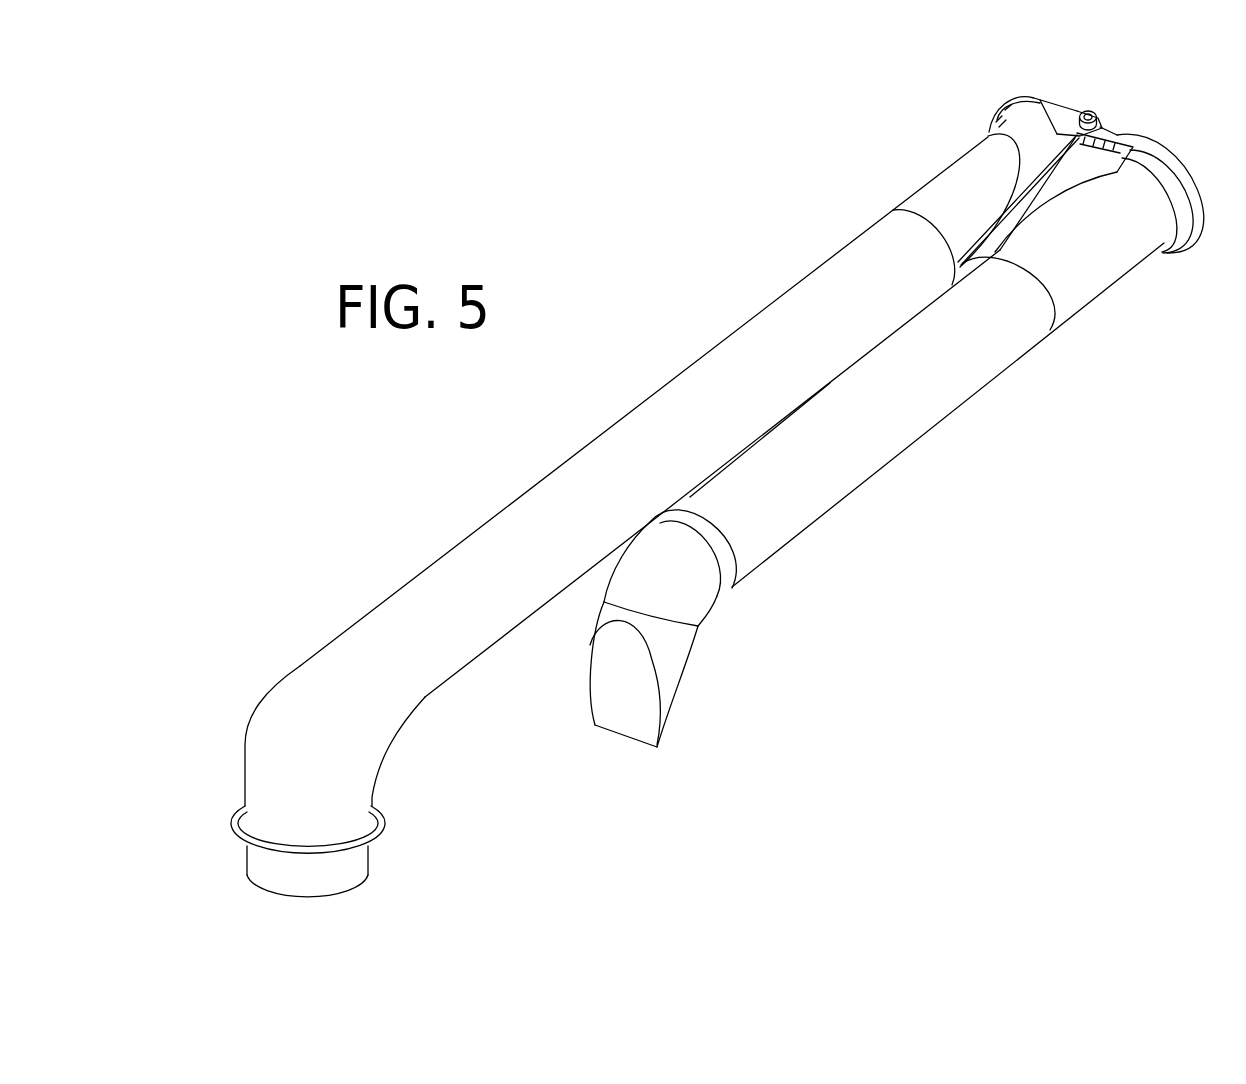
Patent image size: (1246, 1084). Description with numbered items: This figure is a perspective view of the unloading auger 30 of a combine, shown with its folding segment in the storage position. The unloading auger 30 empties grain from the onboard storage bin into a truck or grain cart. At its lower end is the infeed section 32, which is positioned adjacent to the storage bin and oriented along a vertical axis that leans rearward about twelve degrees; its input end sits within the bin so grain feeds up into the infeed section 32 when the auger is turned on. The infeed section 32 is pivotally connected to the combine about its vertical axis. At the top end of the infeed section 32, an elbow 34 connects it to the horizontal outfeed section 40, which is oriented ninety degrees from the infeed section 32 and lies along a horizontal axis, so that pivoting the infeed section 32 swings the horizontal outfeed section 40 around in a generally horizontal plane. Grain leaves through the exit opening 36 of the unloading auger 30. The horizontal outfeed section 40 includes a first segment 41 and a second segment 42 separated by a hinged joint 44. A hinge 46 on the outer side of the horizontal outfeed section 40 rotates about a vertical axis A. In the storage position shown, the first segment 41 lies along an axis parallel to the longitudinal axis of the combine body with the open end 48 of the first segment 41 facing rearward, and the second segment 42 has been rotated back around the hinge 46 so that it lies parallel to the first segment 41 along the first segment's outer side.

The unloading auger 30 is at (703, 258).
The infeed section 32 is at (237, 854).
The elbow 34 is at (256, 684).
The exit opening 36 is at (622, 745).
The horizontal outfeed section 40 is at (765, 590).
The first segment 41 is at (718, 335).
The second segment 42 is at (832, 515).
The hinged joint 44 is at (1147, 102).
The hinge 46 is at (1080, 172).
The open end 48 is at (1053, 94).
The vertical axis A is at (1092, 111).